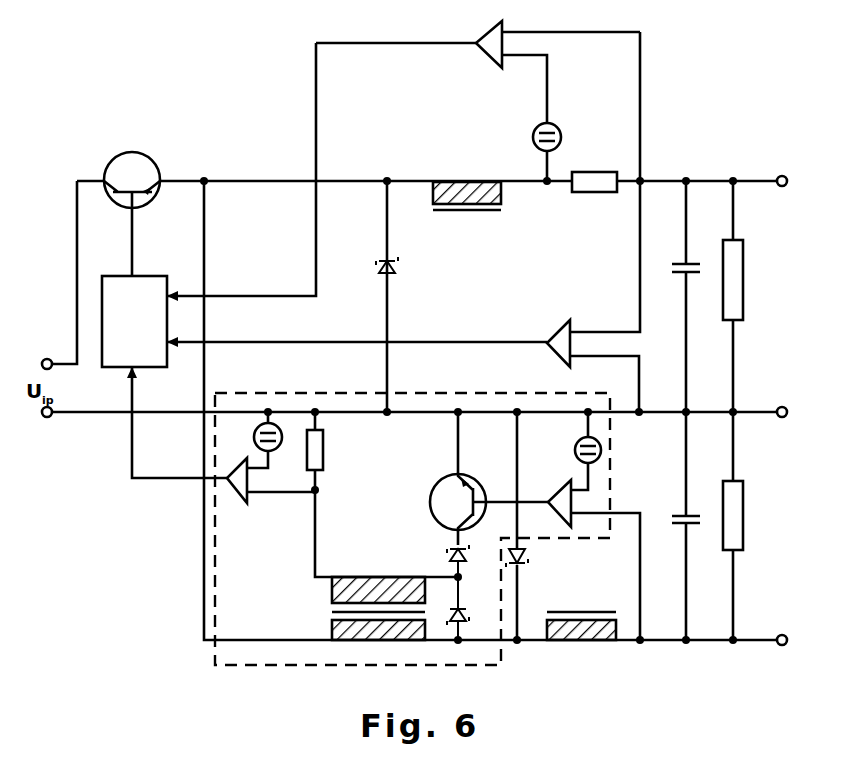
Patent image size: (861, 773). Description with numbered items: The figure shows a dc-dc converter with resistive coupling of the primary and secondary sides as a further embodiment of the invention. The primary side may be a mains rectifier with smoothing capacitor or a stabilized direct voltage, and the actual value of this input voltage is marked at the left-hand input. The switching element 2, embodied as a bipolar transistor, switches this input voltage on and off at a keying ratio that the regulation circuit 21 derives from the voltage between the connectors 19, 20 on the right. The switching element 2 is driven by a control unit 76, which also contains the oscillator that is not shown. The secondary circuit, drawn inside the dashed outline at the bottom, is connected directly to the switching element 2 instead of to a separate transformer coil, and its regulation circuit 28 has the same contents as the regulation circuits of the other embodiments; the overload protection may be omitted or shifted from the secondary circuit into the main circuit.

The switching element 2 is at (140, 170).
The control unit 76 is at (133, 320).
The connector 19 is at (781, 191).
The connector 20 is at (779, 405).
The regulation circuit 21 is at (563, 328).
The regulation circuit 28 is at (252, 583).